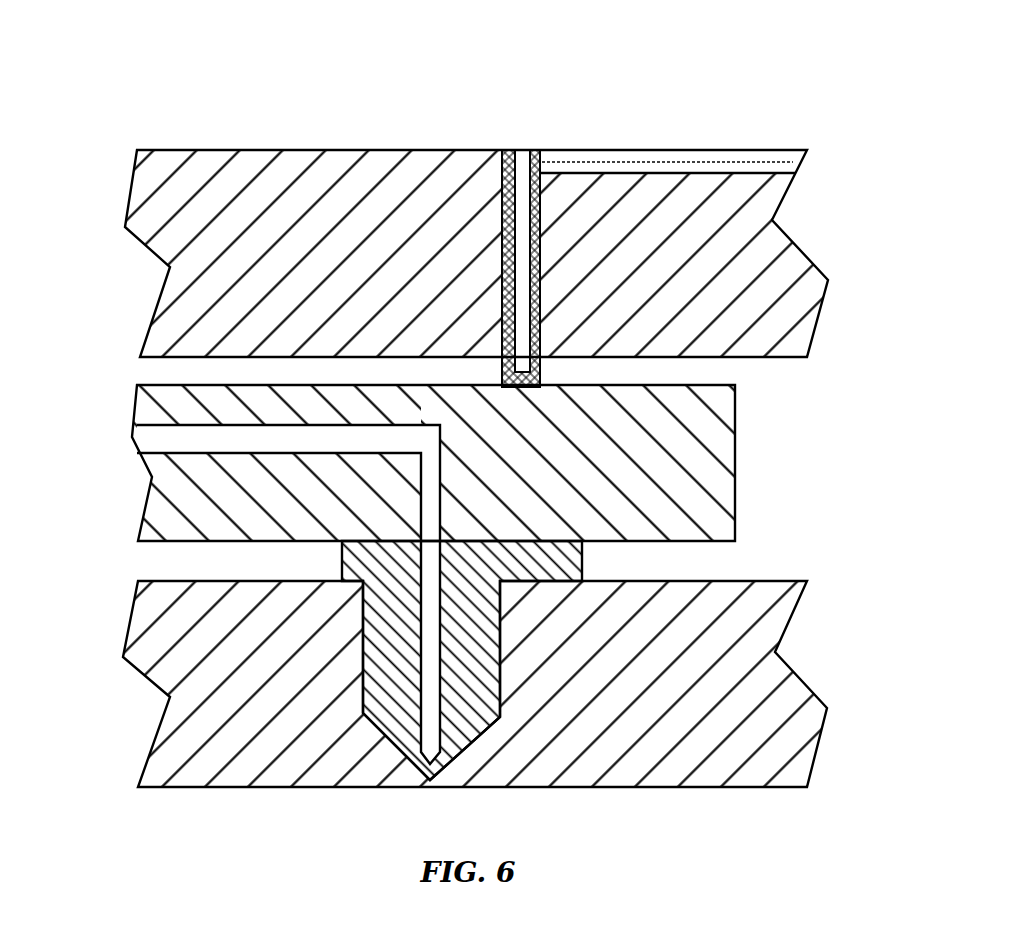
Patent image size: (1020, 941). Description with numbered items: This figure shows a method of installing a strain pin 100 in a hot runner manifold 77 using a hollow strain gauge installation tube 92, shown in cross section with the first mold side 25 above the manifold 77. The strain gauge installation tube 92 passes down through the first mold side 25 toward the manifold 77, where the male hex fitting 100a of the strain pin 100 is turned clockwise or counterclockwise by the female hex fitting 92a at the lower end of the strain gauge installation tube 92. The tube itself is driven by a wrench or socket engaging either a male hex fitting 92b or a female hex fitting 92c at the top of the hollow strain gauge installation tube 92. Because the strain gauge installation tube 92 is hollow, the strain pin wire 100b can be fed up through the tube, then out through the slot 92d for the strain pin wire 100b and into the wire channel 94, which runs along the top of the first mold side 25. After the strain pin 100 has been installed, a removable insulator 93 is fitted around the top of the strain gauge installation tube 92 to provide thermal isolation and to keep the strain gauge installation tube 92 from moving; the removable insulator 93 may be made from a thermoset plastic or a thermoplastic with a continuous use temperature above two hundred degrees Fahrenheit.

The first mold side 25 is at (178, 195).
The hot runner manifold 77 is at (718, 428).
The strain gauge installation tube 92 is at (517, 308).
The female hex fitting 92a is at (540, 377).
The male hex fitting 92b is at (545, 150).
The female hex fitting 92c is at (505, 150).
The slot 92d is at (525, 150).
The removable insulator 93 is at (513, 150).
The wire channel 94 is at (793, 160).
The strain pin 100 is at (540, 379).
The male hex fitting 100a is at (503, 366).
The strain pin wire 100b is at (518, 308).